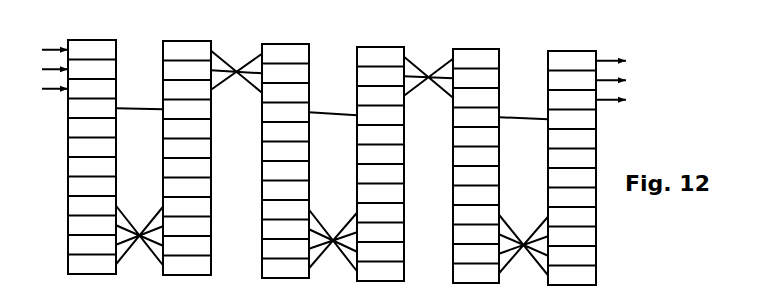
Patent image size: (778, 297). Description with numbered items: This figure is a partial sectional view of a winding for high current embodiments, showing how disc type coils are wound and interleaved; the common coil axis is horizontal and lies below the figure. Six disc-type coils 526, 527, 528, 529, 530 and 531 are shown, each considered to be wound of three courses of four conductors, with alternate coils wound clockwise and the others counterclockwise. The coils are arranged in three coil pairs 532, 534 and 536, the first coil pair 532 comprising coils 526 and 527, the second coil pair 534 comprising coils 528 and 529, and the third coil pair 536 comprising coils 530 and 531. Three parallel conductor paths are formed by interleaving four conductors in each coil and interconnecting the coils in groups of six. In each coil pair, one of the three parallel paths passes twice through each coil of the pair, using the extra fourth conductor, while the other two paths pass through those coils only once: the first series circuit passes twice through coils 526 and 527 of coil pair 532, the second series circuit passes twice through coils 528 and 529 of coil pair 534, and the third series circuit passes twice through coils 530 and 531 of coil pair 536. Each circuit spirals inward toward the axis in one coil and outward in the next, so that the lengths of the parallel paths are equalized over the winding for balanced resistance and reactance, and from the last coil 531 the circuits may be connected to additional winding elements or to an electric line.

The disc-type coil 526 is at (68, 173).
The disc-type coil 527 is at (163, 178).
The disc-type coil 528 is at (262, 180).
The disc-type coil 529 is at (357, 189).
The disc-type coil 530 is at (453, 192).
The disc-type coil 531 is at (548, 192).
The coil pair 532 is at (156, 26).
The coil pair 534 is at (318, 28).
The coil pair 536 is at (539, 34).